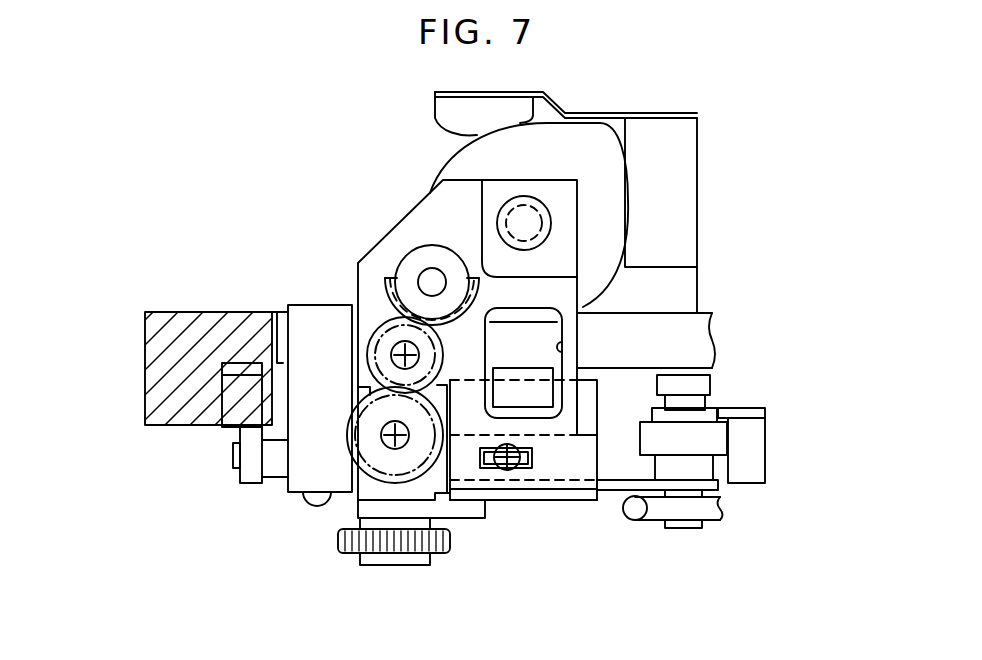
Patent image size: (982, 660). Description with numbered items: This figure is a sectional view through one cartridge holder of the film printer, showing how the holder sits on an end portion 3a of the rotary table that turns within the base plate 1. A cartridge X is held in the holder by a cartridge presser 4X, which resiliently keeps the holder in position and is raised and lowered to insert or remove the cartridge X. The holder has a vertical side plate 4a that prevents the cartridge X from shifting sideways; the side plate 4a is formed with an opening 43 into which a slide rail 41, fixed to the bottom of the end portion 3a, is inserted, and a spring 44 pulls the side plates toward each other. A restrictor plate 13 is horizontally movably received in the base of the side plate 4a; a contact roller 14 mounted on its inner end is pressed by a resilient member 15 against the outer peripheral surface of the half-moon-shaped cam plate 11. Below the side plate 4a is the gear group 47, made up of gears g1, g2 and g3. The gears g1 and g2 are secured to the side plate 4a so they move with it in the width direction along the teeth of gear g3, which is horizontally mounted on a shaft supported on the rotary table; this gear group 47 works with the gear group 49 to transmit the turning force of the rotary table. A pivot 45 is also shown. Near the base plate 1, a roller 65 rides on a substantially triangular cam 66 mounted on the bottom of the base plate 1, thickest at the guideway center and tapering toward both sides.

The base plate 1 is at (190, 312).
The gear group 47 is at (315, 202).
The cam 66 is at (230, 405).
The roller 65 is at (250, 478).
The vertical side plate 4a is at (418, 228).
The cartridge presser 4X is at (448, 115).
The cartridge X is at (458, 160).
The pivot shaft 45 is at (537, 222).
The gear g1 is at (407, 268).
The gear g2 is at (400, 325).
The gear g3 is at (353, 412).
The end portion 3a is at (697, 325).
The opening 43 is at (557, 352).
The slide rail 41 is at (535, 397).
The spring 44 is at (496, 470).
The gear group 49 is at (392, 565).
The restrictor plate 13 is at (613, 487).
The contact roller 14 is at (688, 443).
The resilient member 15 is at (637, 520).
The cam plate 11 is at (753, 453).